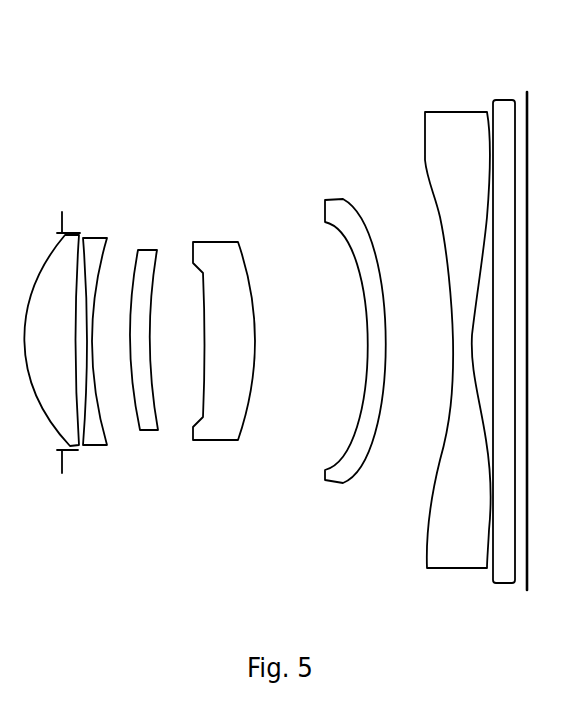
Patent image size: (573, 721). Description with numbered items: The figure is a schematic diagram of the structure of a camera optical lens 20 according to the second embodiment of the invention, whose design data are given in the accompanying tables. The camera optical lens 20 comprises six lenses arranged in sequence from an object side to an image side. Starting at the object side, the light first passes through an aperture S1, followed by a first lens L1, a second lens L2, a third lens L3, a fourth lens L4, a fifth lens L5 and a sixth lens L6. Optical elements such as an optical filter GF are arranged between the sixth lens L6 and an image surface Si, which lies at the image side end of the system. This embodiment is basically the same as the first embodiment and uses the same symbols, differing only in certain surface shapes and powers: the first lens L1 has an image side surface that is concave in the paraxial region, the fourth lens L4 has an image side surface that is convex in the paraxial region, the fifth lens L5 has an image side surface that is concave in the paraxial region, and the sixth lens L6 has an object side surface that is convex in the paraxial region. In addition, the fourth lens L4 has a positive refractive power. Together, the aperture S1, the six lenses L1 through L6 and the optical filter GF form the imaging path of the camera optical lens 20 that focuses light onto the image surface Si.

The camera optical lens 20 is at (302, 33).
The aperture S1 is at (63, 328).
The first lens L1 is at (57, 327).
The second lens L2 is at (98, 329).
The third lens L3 is at (144, 326).
The fourth lens L4 is at (224, 328).
The fifth lens L5 is at (353, 320).
The sixth lens L6 is at (457, 327).
The optical filter GF is at (498, 328).
The image surface Si is at (527, 321).